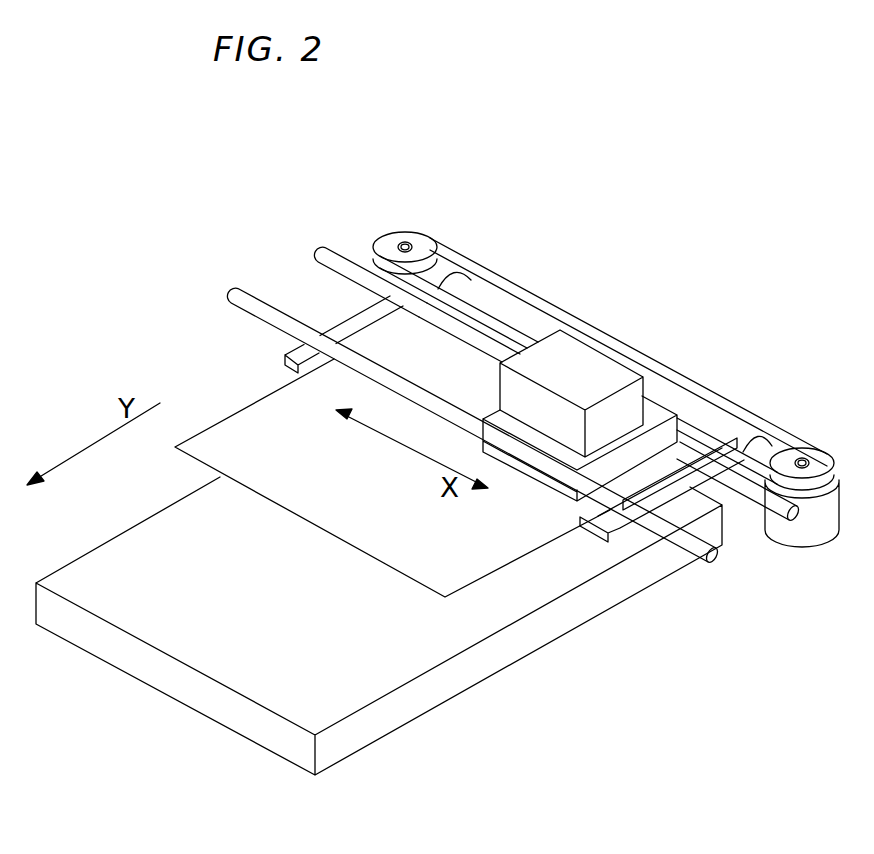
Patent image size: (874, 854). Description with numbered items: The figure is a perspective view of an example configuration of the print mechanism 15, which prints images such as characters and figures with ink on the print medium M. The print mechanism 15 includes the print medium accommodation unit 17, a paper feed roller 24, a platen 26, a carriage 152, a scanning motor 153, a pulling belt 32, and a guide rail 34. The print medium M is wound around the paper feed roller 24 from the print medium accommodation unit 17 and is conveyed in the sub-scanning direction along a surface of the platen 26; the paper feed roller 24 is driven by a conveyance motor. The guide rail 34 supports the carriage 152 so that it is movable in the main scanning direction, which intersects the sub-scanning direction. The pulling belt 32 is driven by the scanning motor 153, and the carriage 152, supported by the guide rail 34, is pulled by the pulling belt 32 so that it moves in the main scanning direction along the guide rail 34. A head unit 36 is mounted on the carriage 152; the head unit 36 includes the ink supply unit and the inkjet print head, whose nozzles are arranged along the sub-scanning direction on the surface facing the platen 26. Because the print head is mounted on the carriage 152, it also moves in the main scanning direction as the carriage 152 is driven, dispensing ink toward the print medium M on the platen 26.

The print mechanism 15 is at (621, 224).
The print medium accommodation unit 17 is at (476, 665).
The print medium M is at (244, 432).
The guide rail 34 is at (268, 296).
The pulling belt 32 is at (505, 279).
The paper feed roller 24 is at (745, 437).
The scanning motor 153 is at (806, 540).
The head unit 36 is at (570, 344).
The carriage 152 is at (543, 444).
The platen 26 is at (599, 528).